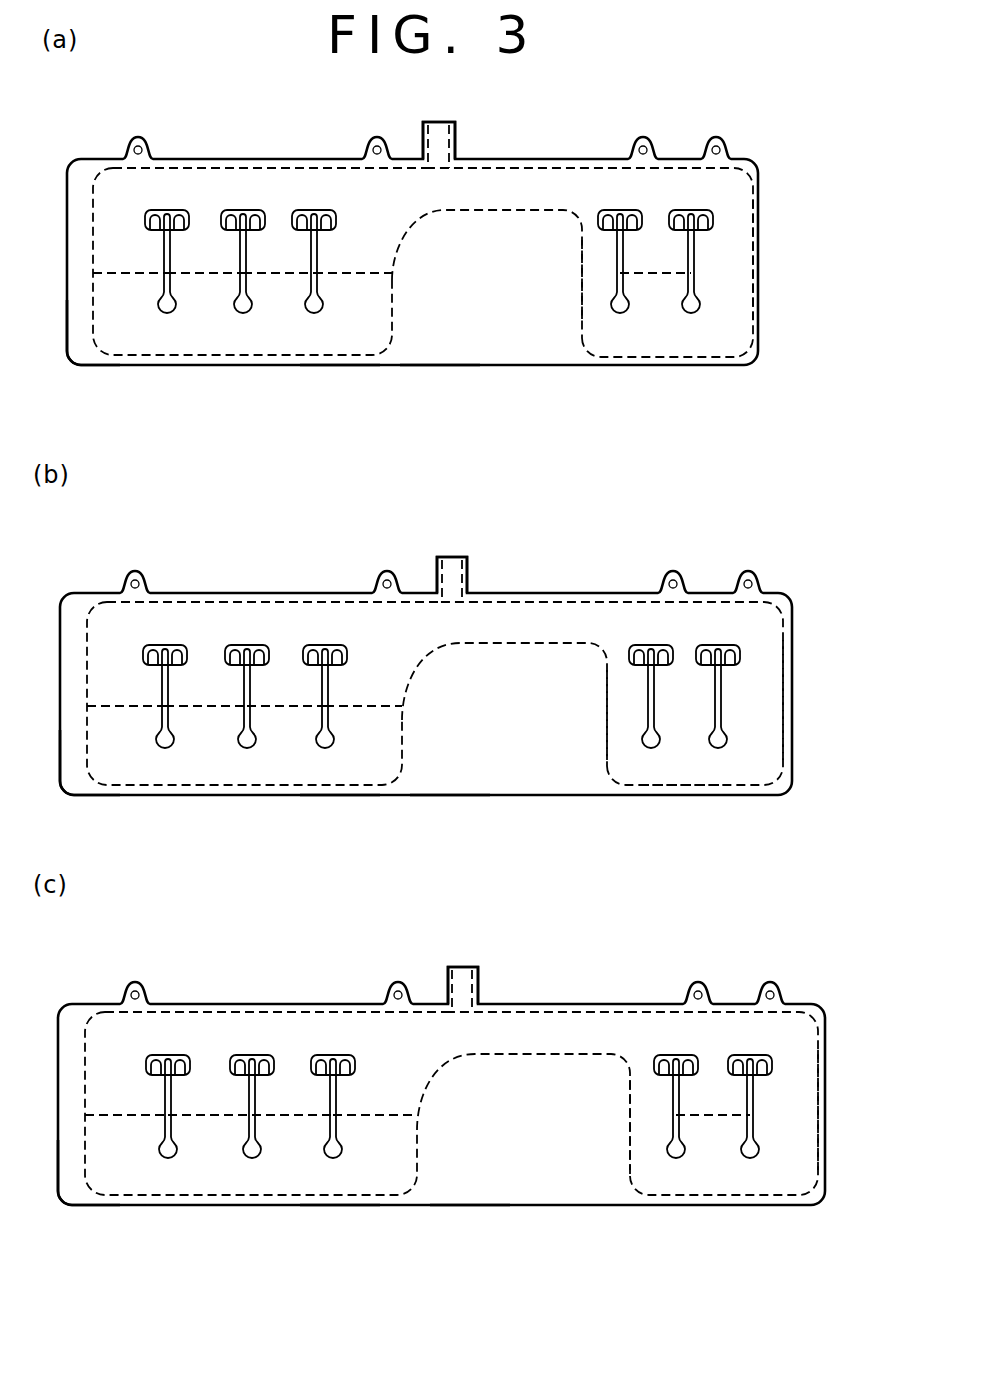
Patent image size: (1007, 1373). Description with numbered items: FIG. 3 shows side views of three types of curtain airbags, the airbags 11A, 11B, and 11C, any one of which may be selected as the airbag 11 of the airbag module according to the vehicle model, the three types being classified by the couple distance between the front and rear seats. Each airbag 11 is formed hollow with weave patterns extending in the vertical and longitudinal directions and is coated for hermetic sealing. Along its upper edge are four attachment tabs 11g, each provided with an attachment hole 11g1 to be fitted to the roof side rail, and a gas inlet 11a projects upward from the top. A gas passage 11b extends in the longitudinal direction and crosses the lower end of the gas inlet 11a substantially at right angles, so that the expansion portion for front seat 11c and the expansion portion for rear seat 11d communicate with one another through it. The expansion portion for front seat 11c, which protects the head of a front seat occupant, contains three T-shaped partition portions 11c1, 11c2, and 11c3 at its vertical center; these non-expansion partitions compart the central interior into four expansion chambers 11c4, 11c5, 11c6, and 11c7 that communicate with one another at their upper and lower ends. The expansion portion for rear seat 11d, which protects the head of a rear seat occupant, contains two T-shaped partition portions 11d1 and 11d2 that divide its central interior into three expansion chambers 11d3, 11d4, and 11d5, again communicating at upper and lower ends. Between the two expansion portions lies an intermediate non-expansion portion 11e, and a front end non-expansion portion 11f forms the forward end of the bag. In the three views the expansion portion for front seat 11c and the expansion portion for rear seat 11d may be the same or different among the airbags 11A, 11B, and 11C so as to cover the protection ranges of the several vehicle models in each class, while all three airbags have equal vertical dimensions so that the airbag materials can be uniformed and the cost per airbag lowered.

The airbag 11 is at (338, 365).
The airbag 11A is at (545, 367).
The airbag 11B is at (545, 797).
The airbag 11C is at (558, 1207).
The gas inlet 11a is at (438, 122).
The gas passage 11b is at (468, 198).
The expansion portion for front seat 11c is at (242, 355).
The T-shaped partition portion 11c1 is at (165, 210).
The T-shaped partition portion 11c2 is at (252, 196).
The T-shaped partition portion 11c3 is at (317, 208).
The expansion chamber 11c4 is at (126, 680).
The expansion chamber 11c5 is at (208, 680).
The expansion chamber 11c6 is at (288, 680).
The expansion chamber 11c7 is at (365, 680).
The expansion portion for rear seat 11d is at (653, 358).
The T-shaped partition portion 11d1 is at (619, 210).
The T-shaped partition portion 11d2 is at (691, 210).
The expansion chamber 11d3 is at (600, 265).
The expansion chamber 11d4 is at (697, 867).
The expansion chamber 11d5 is at (842, 280).
The intermediate non-expansion portion 11e is at (440, 353).
The front end non-expansion portion 11f is at (85, 335).
The attachment tab 11g is at (145, 140).
The attachment hole 11g1 is at (131, 144).